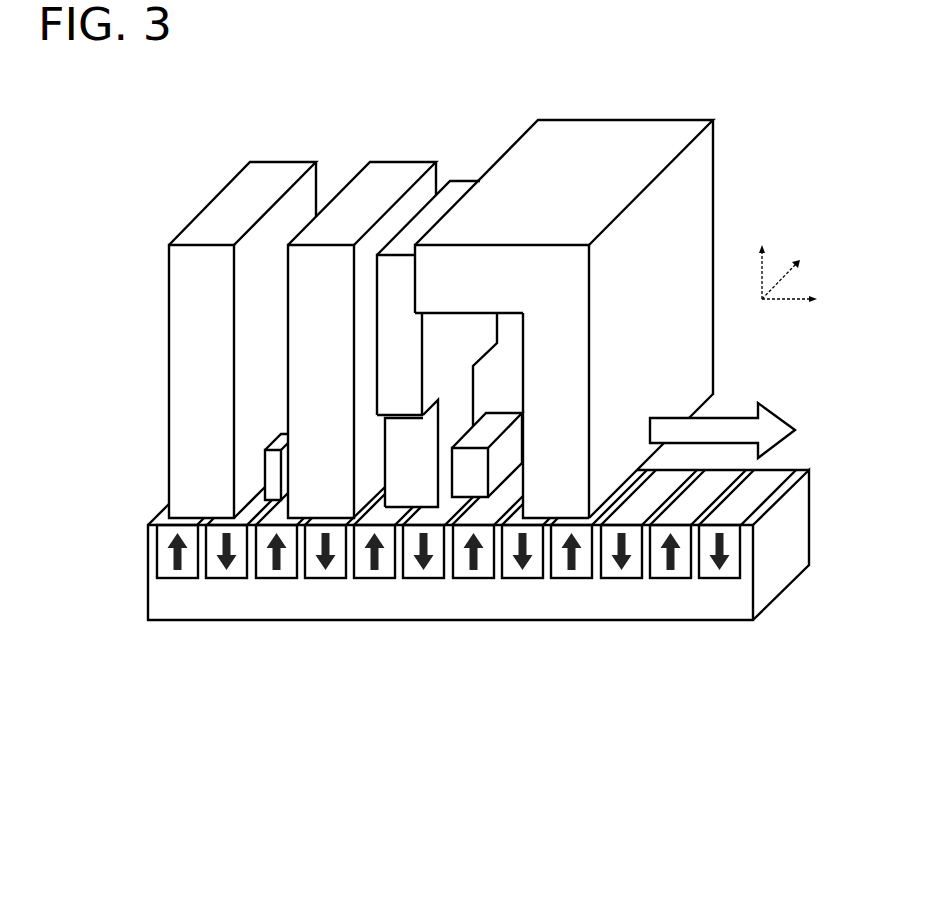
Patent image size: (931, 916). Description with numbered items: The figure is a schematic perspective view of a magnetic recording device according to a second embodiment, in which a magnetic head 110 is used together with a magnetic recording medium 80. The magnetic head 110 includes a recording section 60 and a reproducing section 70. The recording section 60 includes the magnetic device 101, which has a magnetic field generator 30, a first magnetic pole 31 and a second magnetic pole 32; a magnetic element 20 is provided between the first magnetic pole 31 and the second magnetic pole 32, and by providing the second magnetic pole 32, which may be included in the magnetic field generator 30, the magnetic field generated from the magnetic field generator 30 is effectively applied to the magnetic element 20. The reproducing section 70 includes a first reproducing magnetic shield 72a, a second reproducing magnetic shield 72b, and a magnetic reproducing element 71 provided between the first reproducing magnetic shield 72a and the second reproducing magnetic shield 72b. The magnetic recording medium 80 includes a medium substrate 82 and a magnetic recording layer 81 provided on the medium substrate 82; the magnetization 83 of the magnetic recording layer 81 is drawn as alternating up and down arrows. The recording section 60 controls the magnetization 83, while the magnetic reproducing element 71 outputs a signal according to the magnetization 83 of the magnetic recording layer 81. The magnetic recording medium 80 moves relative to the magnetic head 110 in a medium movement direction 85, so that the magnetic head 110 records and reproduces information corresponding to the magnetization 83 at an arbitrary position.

The magnetic head 110 is at (746, 143).
The magnetic device 101 is at (648, 93).
The magnetic field generator 30 is at (485, 153).
The first magnetic pole 31 is at (416, 494).
The second magnetic pole 32 is at (562, 494).
The magnetic element 20 is at (472, 478).
The recording section 60 is at (550, 697).
The reproducing section 70 is at (443, 103).
The magnetic reproducing element 71 is at (271, 437).
The first reproducing magnetic shield 72a is at (268, 178).
The second reproducing magnetic shield 72b is at (388, 178).
The magnetic recording medium 80 is at (237, 683).
The magnetic recording layer 81 is at (176, 582).
The medium substrate 82 is at (217, 601).
The magnetization 83 is at (276, 581).
The medium movement direction 85 is at (733, 428).